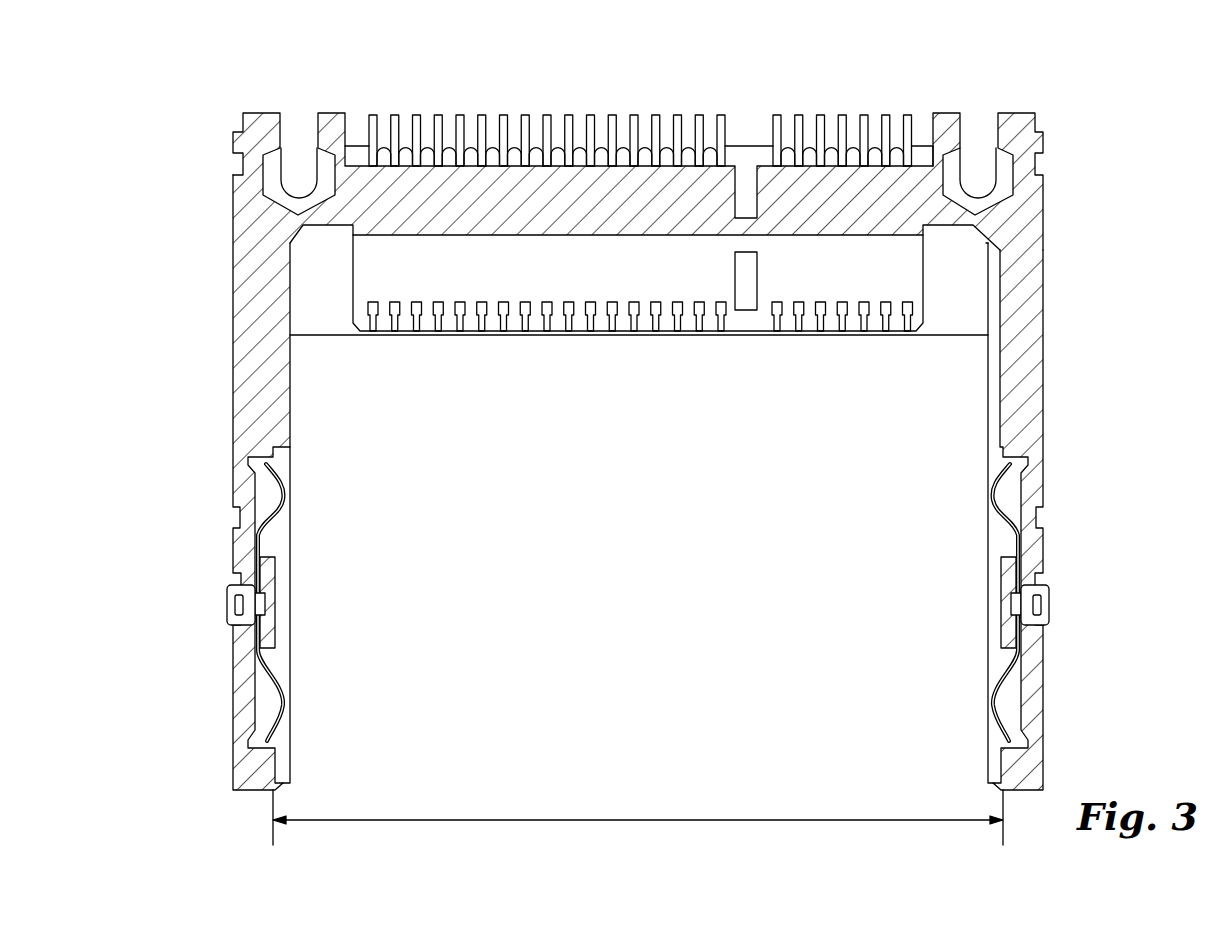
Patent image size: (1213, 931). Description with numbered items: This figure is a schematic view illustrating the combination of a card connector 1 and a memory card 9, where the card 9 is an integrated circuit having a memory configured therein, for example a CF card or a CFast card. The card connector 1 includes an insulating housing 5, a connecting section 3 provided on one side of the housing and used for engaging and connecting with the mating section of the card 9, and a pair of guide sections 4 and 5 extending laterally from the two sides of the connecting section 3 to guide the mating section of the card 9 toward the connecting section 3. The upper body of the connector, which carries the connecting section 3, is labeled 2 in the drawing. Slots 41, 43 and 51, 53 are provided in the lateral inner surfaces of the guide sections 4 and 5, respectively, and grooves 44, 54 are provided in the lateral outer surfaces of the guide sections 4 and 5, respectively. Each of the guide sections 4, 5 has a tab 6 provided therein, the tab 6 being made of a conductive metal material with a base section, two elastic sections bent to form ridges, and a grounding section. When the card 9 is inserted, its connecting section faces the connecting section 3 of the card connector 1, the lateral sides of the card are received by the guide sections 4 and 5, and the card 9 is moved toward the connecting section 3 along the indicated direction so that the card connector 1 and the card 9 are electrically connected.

The card connector 1 is at (1079, 76).
The connector housing 2 is at (857, 183).
The connecting section 3 is at (603, 263).
The guide section 4 is at (248, 353).
The guide section 5 is at (1037, 375).
The tab 6 is at (257, 628).
The card 9 is at (797, 815).
The slot 41 is at (268, 711).
The slot 43 is at (265, 489).
The groove 44 is at (228, 603).
The slot 51 is at (1010, 711).
The slot 53 is at (1012, 495).
The groove 54 is at (1052, 604).